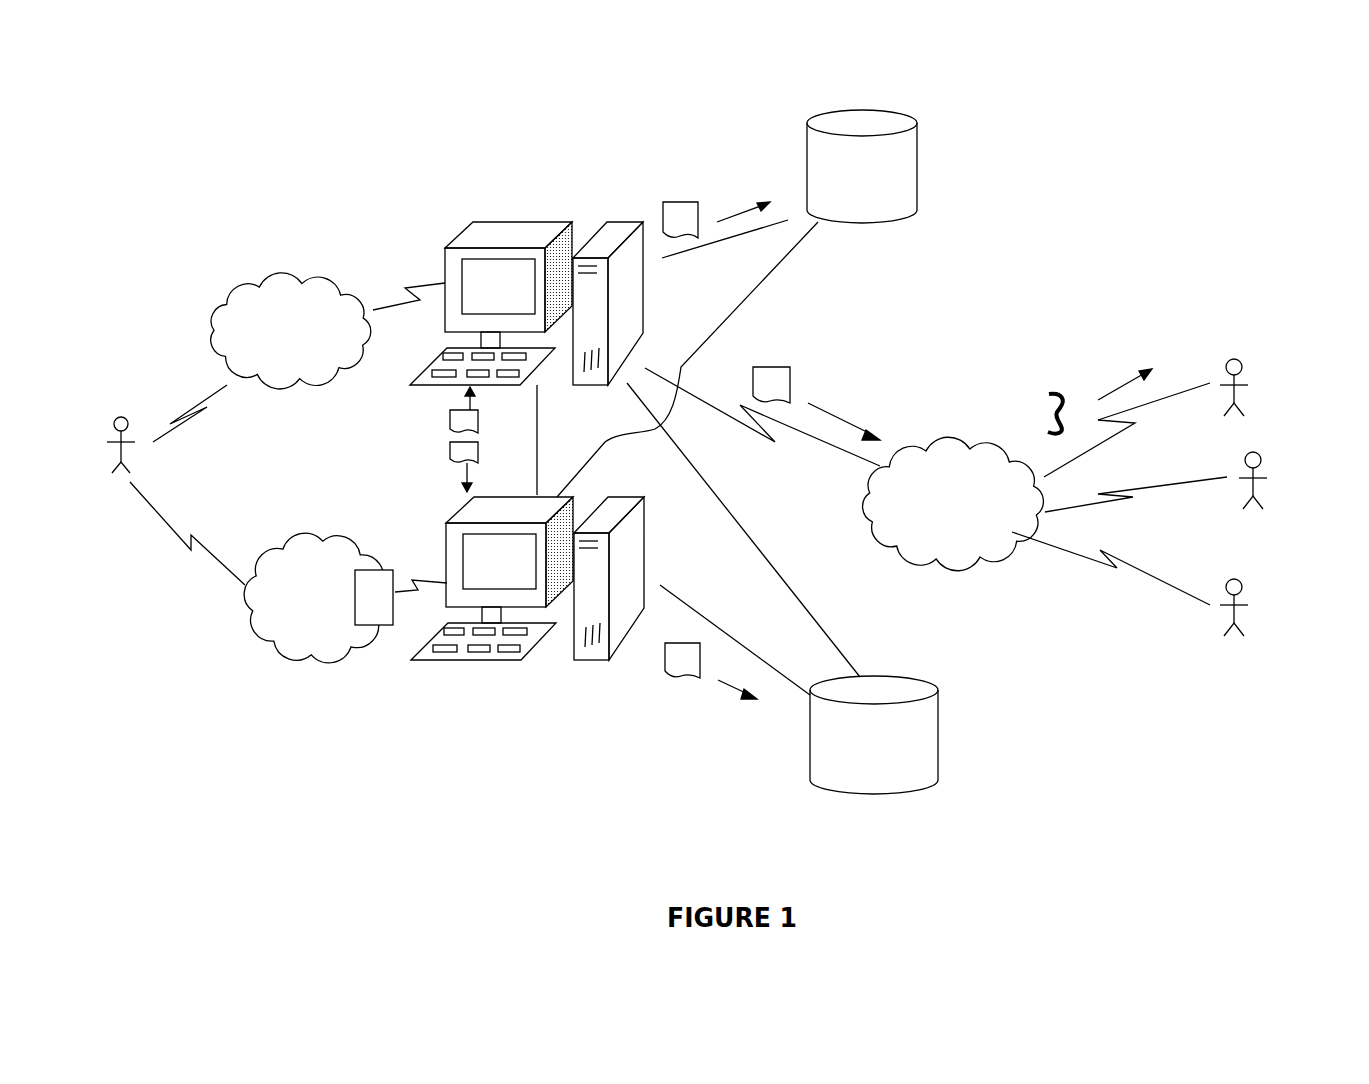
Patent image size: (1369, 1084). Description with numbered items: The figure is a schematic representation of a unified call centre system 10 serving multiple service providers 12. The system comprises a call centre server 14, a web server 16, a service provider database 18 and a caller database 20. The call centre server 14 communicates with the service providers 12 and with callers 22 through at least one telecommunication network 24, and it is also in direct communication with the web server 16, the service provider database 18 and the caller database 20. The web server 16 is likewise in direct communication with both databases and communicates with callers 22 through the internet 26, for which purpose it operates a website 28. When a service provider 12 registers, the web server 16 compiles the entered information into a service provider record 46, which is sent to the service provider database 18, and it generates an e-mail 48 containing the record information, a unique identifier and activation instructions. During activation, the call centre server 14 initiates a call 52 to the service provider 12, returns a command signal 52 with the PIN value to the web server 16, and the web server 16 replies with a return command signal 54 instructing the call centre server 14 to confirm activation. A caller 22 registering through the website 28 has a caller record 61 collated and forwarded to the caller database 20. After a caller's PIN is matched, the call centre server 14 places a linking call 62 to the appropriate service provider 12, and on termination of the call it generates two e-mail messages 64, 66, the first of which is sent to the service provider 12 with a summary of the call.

The unified call centre system 10 is at (229, 832).
The service providers 12 is at (1248, 366).
The call centre server 14 is at (465, 222).
The web server 16 is at (537, 660).
The service provider database 18 is at (862, 166).
The caller database 20 is at (874, 735).
The callers 22 is at (116, 406).
The telecommunication network 24 is at (627, 422).
The internet 26 is at (317, 598).
The website 28 is at (374, 607).
The service provider record 46 is at (643, 185).
The e-mail 48 is at (816, 350).
The first e-mail message 64 is at (789, 350).
The command signal 52 is at (447, 459).
The return command signal 54 is at (443, 421).
The linking call 62 is at (1063, 390).
The caller record 61 is at (701, 711).
The second e-mail message 66 is at (684, 698).